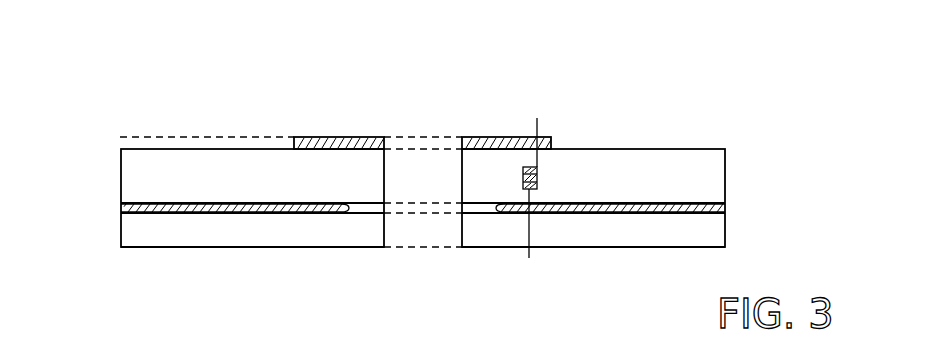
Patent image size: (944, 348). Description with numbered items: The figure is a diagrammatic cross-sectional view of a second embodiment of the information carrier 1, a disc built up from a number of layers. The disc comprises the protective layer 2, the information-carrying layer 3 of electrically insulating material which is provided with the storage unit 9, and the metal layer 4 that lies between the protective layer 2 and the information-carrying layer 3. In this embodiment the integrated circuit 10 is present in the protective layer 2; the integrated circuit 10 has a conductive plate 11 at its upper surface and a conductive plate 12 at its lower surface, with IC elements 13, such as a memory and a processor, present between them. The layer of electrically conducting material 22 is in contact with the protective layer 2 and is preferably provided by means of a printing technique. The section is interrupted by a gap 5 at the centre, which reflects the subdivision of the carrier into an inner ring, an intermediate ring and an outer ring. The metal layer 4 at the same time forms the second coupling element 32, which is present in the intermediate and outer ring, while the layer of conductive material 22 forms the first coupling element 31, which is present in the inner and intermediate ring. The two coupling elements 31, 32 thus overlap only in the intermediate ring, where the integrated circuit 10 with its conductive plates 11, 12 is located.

The information carrier 1 is at (230, 112).
The protective layer 2 is at (135, 177).
The information-carrying layer 3 is at (130, 236).
The metal layer 4 is at (130, 208).
The separating gap / cut line 5 is at (423, 141).
The storage unit 9 is at (200, 232).
The integrated circuit 10 is at (548, 175).
The conductive plate 11 is at (538, 130).
The conductive plate 12 is at (531, 236).
The IC elements 13 is at (523, 178).
The layer of electrically conducting material 22 is at (133, 143).
The first coupling element 31 is at (334, 136).
The second coupling element 32 is at (331, 221).